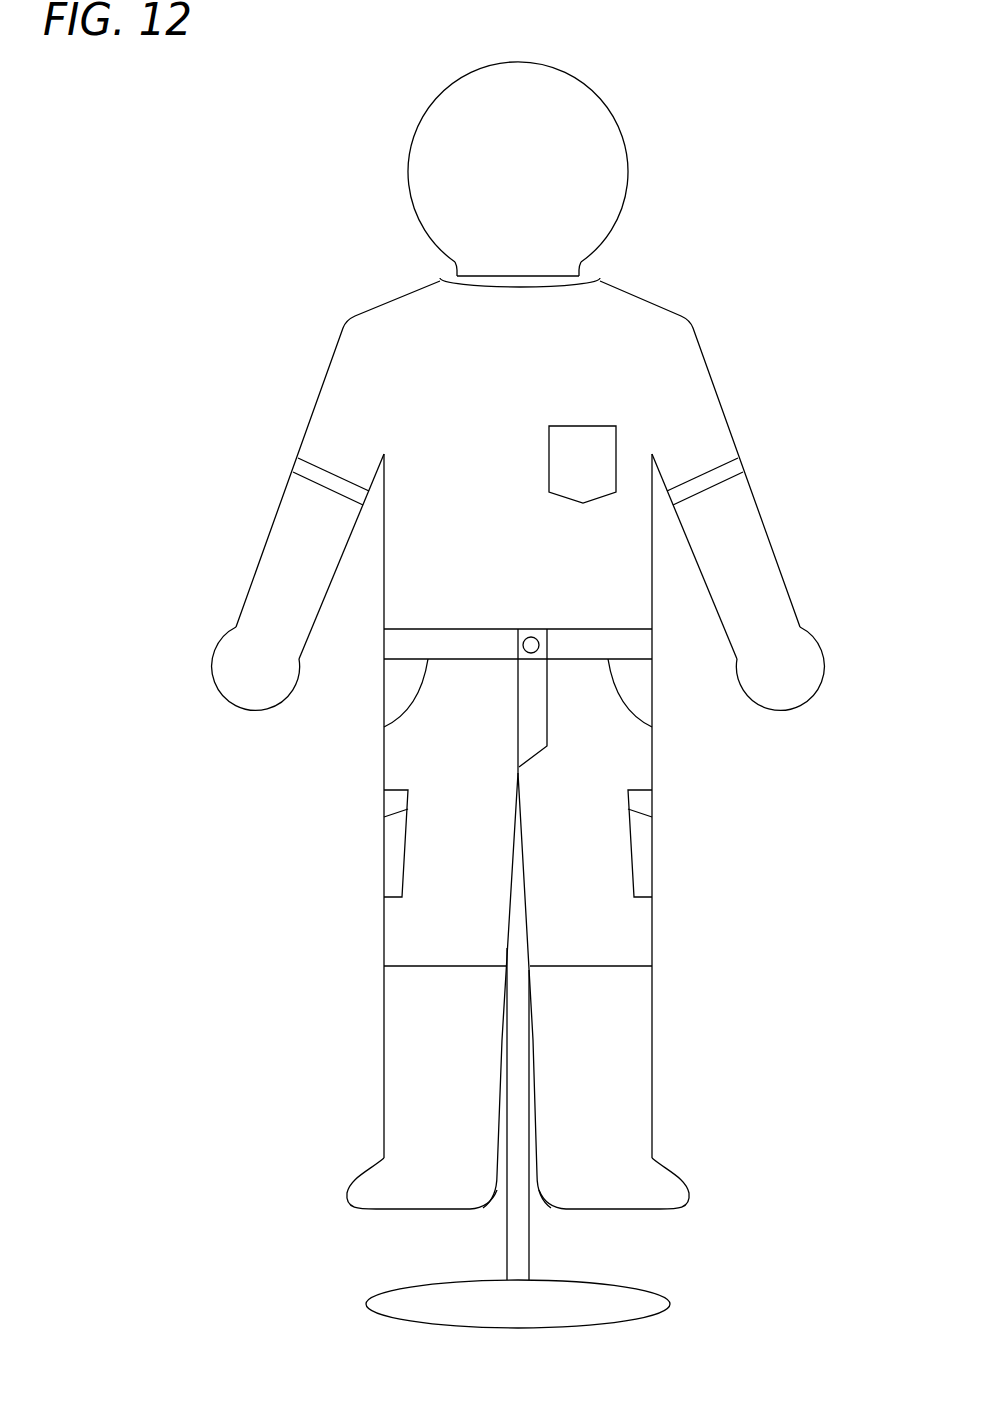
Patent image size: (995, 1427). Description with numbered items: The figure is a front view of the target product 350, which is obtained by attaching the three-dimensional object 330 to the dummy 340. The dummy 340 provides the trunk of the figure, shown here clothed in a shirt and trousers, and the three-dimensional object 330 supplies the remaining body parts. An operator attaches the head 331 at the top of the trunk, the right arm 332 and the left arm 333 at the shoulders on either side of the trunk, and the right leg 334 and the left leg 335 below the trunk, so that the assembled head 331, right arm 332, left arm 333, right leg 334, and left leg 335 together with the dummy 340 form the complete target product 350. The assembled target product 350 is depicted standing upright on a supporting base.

The three-dimensional object 330 is at (385, 177).
The head 331 is at (580, 195).
The right arm 332 is at (278, 585).
The left arm 333 is at (757, 585).
The right leg 334 is at (400, 1075).
The left leg 335 is at (632, 1075).
The dummy 340 is at (717, 322).
The target product 350 is at (695, 126).